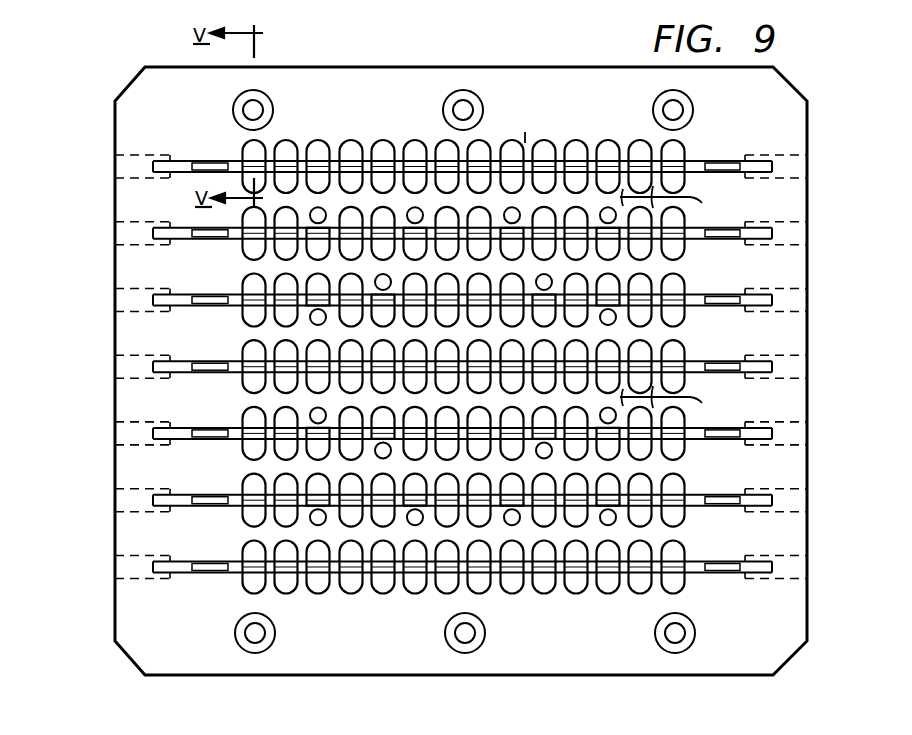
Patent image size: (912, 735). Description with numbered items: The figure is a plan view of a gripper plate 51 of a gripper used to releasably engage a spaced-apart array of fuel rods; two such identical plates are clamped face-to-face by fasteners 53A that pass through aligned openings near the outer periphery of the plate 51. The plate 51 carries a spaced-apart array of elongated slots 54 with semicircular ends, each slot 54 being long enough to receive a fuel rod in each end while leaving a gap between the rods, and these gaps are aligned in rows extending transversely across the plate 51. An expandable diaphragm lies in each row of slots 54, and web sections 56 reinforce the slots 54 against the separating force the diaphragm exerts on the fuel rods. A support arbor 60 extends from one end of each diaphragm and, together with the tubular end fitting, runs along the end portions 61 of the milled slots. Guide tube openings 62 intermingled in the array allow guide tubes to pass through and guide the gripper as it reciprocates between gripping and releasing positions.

The gripper plate 51 is at (125, 134).
The fastener 53A is at (253, 110).
The elongated slots 54 is at (407, 140).
The web sections 56 is at (555, 143).
The support arbor 60 is at (718, 360).
The end portions of the milled slots 61 is at (760, 165).
The guide tube openings 62 is at (412, 217).